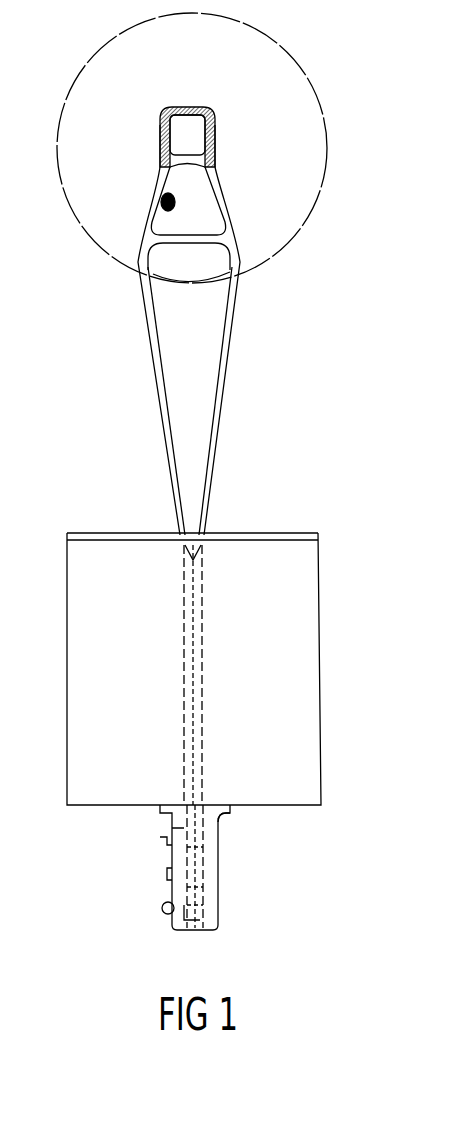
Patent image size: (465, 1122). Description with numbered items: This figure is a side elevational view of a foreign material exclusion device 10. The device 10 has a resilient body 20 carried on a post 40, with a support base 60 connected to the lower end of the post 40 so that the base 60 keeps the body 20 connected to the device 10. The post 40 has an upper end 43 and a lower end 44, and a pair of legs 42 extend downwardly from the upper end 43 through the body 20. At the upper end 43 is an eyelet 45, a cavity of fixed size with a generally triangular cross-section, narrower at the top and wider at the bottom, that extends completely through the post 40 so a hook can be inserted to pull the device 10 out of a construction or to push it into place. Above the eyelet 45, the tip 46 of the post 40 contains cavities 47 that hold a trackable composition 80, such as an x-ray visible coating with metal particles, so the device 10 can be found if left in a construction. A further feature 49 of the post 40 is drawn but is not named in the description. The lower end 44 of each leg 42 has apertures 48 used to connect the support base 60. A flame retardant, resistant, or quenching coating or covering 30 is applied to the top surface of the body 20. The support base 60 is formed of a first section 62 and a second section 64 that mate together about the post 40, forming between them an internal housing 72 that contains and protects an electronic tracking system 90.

The foreign material exclusion device 10 is at (373, 215).
The resilient body 20 is at (318, 633).
The flame retardant coating or covering 30 is at (268, 533).
The post 40 is at (230, 378).
The leg 42 is at (160, 417).
The upper end 43 is at (215, 213).
The lower end 44 is at (205, 785).
The eyelet 45 is at (163, 199).
The tip 46 is at (165, 108).
The cavity 47 is at (165, 135).
The aperture 48 is at (184, 828).
The strap surface 49 is at (228, 342).
The support base 60 is at (232, 863).
The first section 62 is at (220, 835).
The second section 64 is at (172, 876).
The internal housing 72 is at (220, 878).
The trackable coating 80 is at (205, 107).
The electronic tracking system 90 is at (213, 876).